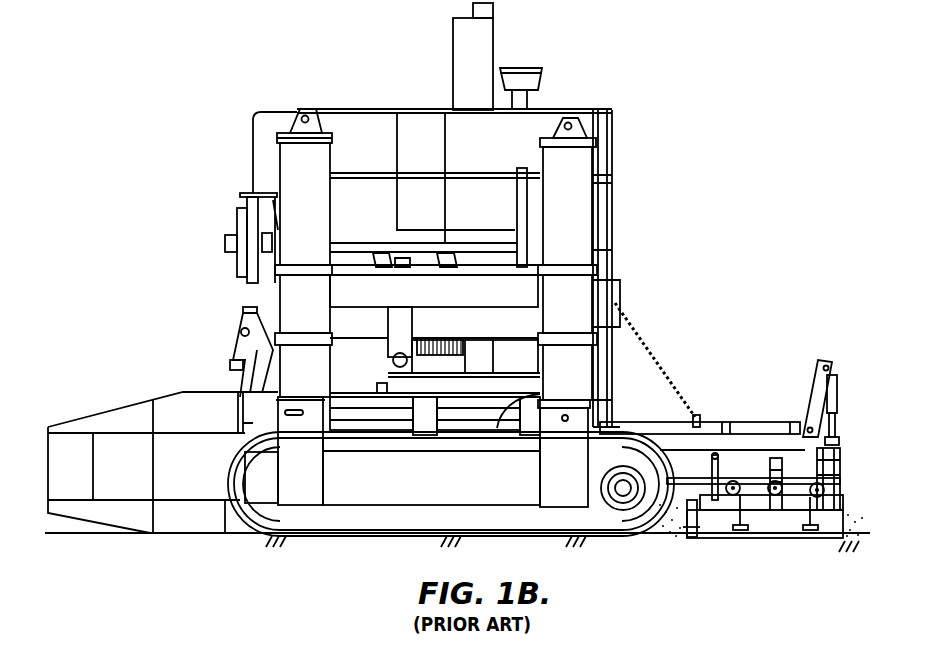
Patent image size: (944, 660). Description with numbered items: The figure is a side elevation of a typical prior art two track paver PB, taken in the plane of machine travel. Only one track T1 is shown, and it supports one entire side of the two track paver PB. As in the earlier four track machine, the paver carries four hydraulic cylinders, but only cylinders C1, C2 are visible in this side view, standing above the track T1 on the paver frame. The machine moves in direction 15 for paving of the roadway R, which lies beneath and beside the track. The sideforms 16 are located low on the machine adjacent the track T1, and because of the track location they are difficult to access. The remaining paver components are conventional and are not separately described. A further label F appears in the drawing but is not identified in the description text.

The direction of paving 15 is at (205, 342).
The sideforms 16 is at (540, 393).
The hydraulic cylinder C1 is at (312, 220).
The hydraulic cylinder C2 is at (580, 223).
The track T1 is at (388, 488).
The direction of material flow F is at (268, 297).
The two track paver PB is at (625, 237).
The roadway R is at (858, 500).